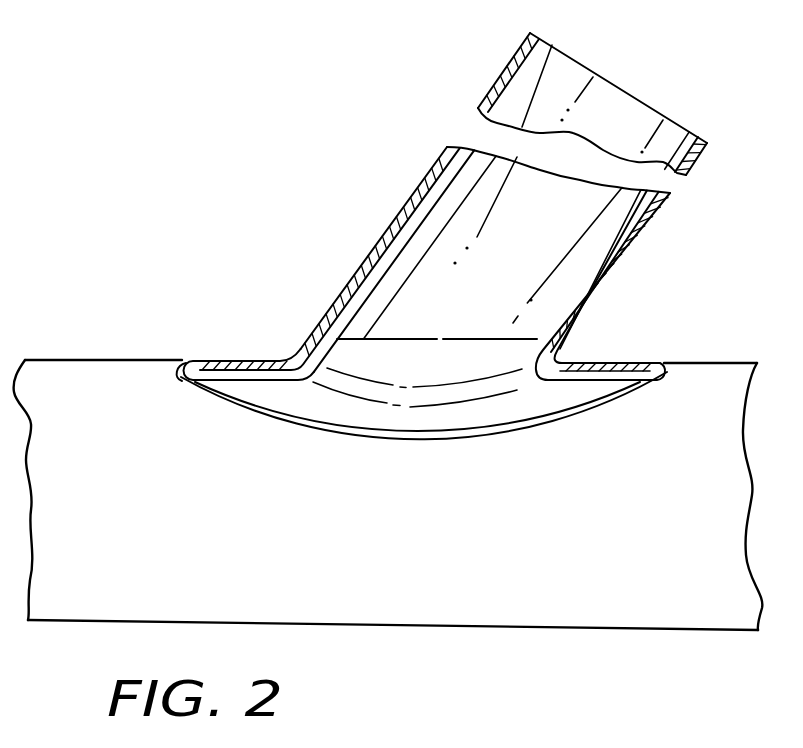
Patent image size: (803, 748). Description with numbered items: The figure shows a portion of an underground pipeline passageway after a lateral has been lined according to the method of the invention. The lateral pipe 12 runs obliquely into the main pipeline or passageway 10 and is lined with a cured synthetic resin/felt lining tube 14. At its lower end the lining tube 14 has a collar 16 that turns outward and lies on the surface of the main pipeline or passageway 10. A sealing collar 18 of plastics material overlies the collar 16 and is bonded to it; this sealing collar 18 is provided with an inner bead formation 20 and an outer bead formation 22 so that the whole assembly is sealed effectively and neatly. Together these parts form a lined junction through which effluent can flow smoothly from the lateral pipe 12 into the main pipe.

The main pipeline or passageway 10 is at (108, 360).
The lateral pipe 12 is at (377, 247).
The lining tube 14 is at (420, 185).
The collar 16 is at (253, 360).
The sealing collar 18 is at (437, 407).
The inner bead formation 20 is at (175, 377).
The outer bead formation 22 is at (387, 340).